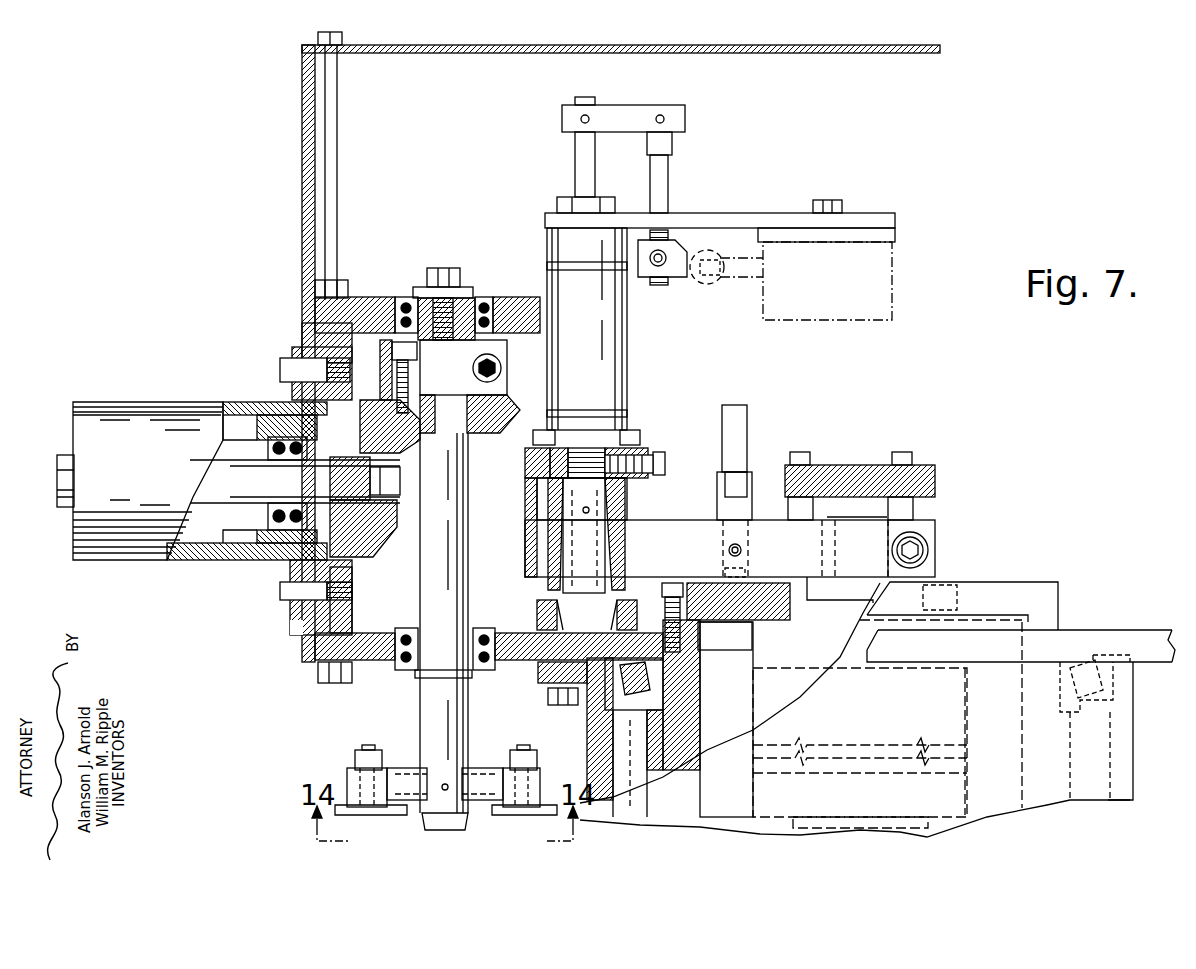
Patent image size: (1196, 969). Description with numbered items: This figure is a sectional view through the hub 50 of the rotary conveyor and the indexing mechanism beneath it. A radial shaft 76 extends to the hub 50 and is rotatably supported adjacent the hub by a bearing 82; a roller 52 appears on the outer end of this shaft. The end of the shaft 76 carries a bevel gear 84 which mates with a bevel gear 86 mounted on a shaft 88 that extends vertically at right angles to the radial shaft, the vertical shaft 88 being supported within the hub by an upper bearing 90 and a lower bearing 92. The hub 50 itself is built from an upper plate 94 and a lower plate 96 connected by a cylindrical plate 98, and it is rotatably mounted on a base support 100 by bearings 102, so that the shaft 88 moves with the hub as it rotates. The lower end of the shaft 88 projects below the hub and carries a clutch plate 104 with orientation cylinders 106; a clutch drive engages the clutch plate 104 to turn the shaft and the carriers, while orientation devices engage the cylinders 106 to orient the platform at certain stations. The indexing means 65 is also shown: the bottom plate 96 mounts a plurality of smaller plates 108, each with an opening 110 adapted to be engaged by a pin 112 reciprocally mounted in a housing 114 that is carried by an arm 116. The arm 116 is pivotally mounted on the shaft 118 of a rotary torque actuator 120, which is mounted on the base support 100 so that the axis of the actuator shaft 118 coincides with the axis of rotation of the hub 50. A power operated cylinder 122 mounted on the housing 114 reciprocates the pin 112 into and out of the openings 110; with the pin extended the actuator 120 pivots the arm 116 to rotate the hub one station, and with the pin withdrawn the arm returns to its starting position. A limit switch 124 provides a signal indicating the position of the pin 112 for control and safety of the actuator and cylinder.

The hub 50 is at (288, 120).
The roller 52 is at (238, 402).
The indexing means 65 is at (765, 455).
The shaft 76 is at (207, 512).
The bearing 82 is at (268, 512).
The bevel gear 84 is at (375, 553).
The bevel gear 86 is at (507, 440).
The shaft 88 is at (470, 537).
The bearing 90 is at (405, 292).
The bearing 92 is at (407, 670).
The upper plate 94 is at (432, 53).
The lower plate 96 is at (372, 662).
The cylindrical plate 98 is at (302, 217).
The base support 100 is at (633, 780).
The bearings 102 is at (602, 730).
The clutch plate 104 is at (347, 812).
The orientation cylinders 106 is at (485, 770).
The plates 108 is at (637, 603).
The opening 110 is at (538, 622).
The pin 112 is at (548, 583).
The housing 114 is at (648, 510).
The arm 116 is at (690, 520).
The shaft 118 is at (898, 523).
The rotary torque actuator 120 is at (752, 715).
The power operated cylinder 122 is at (627, 348).
The limit switch 124 is at (822, 322).